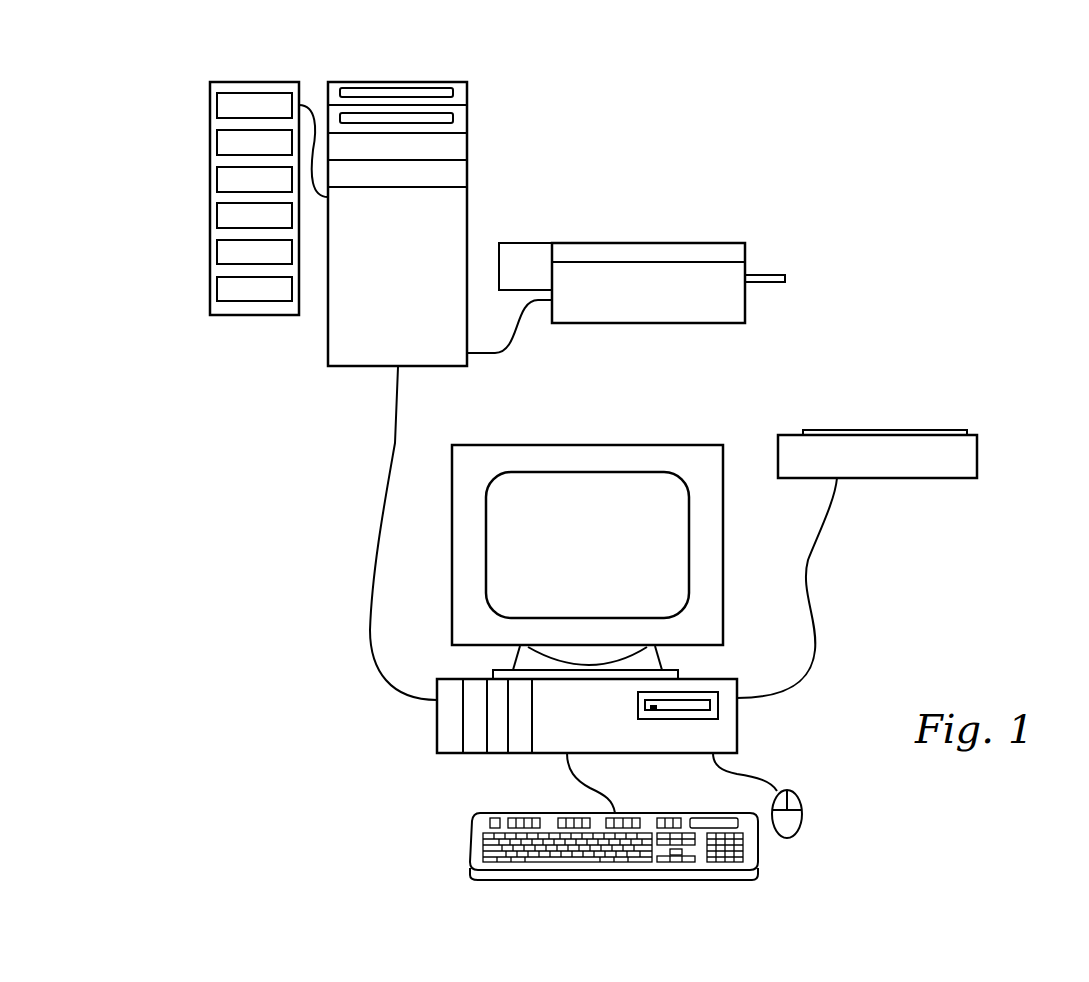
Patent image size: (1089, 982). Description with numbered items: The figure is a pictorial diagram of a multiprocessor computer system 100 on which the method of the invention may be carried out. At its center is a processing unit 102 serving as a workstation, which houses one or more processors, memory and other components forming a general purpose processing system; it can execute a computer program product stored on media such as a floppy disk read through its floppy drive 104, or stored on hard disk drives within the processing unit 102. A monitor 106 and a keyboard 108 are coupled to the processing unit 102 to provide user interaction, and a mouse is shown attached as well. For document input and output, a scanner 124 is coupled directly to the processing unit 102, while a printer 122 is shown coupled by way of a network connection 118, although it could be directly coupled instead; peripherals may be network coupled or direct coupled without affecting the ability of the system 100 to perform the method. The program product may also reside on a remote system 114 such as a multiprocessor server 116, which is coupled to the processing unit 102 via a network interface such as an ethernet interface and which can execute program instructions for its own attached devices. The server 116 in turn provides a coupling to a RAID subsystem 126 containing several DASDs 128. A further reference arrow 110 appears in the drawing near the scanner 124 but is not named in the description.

The multiprocessor computer system 100 is at (897, 123).
The processing unit 102 is at (437, 729).
The floppy drive 104 is at (720, 692).
The monitor 106 is at (668, 445).
The keyboard 108 is at (472, 845).
The network 110 is at (1018, 528).
The remote system 114 is at (467, 205).
The multiprocessor server 116 is at (454, 91).
The network connection 118 is at (392, 445).
The printer 122 is at (707, 243).
The scanner 124 is at (925, 430).
The RAID subsystem 126 is at (208, 98).
The DASD 128 is at (267, 301).